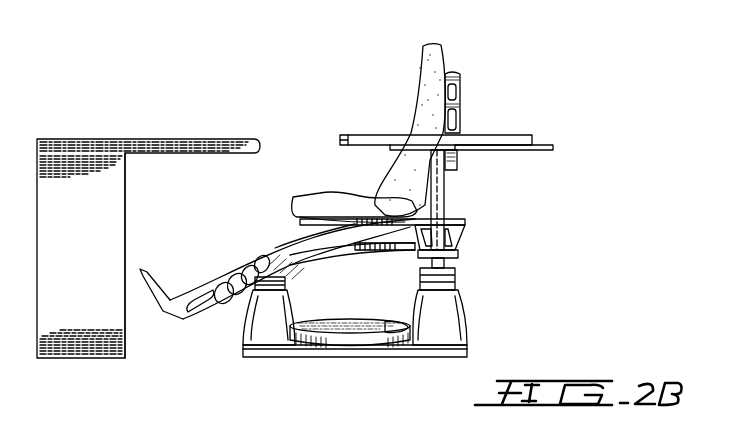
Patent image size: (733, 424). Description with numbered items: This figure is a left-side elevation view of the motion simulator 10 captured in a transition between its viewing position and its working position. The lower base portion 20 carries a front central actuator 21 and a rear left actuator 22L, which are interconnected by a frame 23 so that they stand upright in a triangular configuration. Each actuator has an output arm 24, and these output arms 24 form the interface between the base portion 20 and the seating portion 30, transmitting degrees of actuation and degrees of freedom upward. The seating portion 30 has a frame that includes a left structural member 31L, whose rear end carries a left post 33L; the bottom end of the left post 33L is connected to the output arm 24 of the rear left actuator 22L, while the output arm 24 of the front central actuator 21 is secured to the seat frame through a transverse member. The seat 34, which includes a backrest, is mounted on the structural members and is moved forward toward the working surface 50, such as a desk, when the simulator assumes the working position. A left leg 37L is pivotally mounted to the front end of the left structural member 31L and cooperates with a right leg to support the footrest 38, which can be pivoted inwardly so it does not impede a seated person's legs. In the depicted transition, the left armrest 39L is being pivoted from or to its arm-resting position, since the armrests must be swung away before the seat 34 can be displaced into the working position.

The motion simulator 10 is at (593, 90).
The base portion 20 is at (300, 366).
The front central actuator 21 is at (255, 322).
The rear left actuator 22L is at (465, 310).
The frame 23 is at (355, 345).
The output arm 24 is at (442, 262).
The seating portion 30 is at (503, 84).
The left structural member 31L is at (345, 250).
The left post 33L is at (427, 183).
The seat 34 is at (410, 93).
The left leg 37L is at (200, 290).
The footrest 38 is at (158, 297).
The left armrest 39L is at (498, 142).
The working surface 50 is at (137, 139).